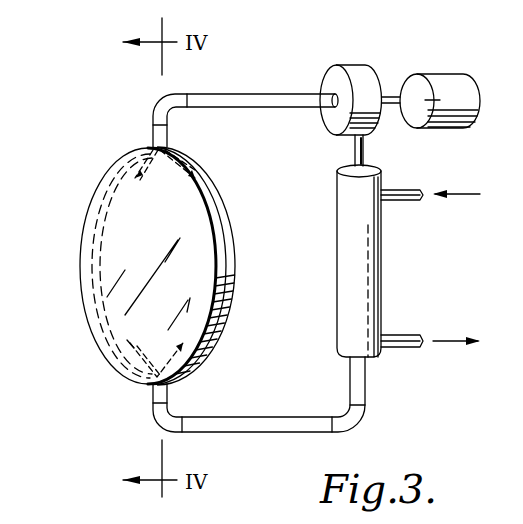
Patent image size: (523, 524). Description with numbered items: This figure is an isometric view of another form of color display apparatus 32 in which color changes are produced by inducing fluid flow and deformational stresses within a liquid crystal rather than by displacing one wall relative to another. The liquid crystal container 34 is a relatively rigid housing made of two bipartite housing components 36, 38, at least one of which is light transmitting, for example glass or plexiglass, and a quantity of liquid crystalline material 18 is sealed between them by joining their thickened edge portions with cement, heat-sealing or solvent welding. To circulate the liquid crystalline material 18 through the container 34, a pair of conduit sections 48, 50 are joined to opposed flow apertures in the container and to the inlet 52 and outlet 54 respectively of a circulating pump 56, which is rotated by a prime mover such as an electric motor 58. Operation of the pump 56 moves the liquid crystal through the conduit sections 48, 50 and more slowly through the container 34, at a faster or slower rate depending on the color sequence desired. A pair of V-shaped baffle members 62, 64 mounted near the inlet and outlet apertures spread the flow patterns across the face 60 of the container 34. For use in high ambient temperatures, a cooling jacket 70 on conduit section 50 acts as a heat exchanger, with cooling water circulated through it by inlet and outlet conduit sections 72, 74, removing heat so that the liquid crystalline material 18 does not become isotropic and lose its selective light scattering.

The color display apparatus 32 is at (297, 68).
The conduit section 48 is at (255, 100).
The conduit section 50 is at (247, 417).
The inlet 52 is at (340, 68).
The outlet 54 is at (362, 140).
The circulating pump 56 is at (367, 80).
The electric motor 58 is at (452, 82).
The cooling jacket 70 is at (357, 272).
The inlet conduit section 72 is at (405, 197).
The outlet conduit section 74 is at (403, 335).
The liquid crystal container 34 is at (82, 303).
The housing component 36 is at (97, 197).
The housing component 38 is at (217, 195).
The liquid crystalline material 18 is at (100, 248).
The face 60 is at (180, 287).
The V-shaped baffle member 62 is at (197, 163).
The V-shaped baffle member 64 is at (217, 340).